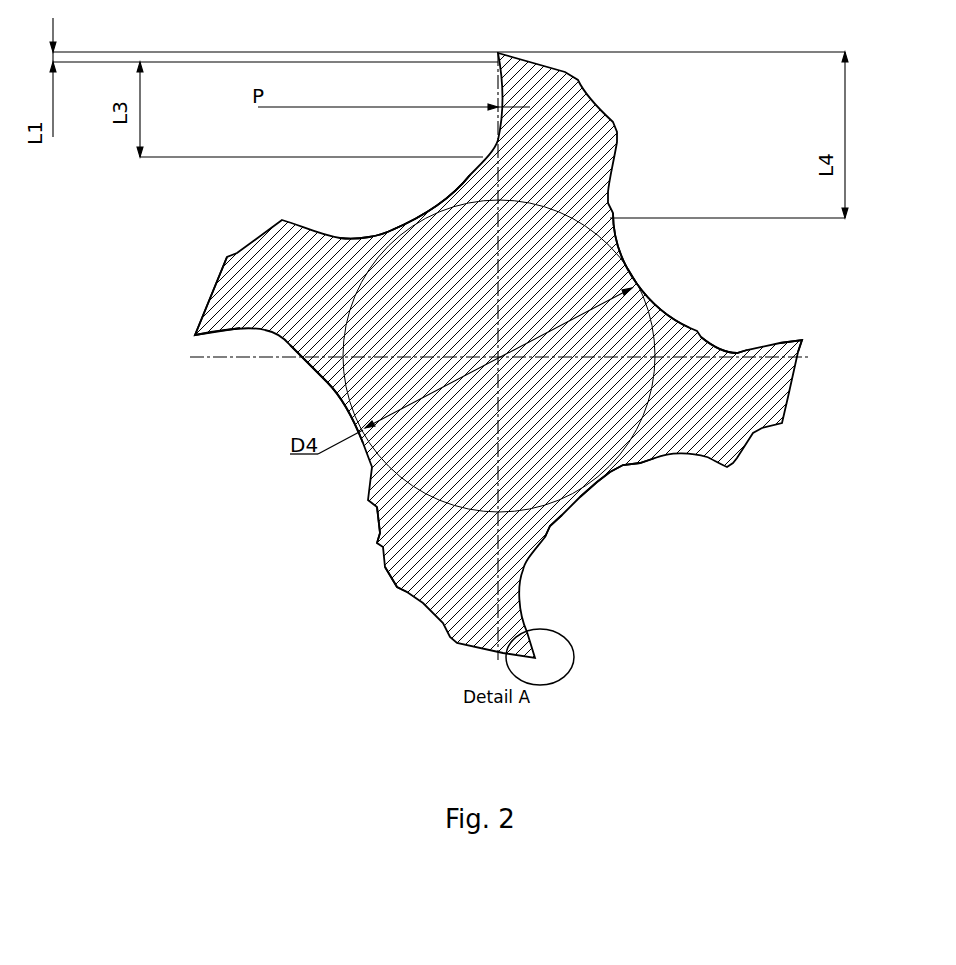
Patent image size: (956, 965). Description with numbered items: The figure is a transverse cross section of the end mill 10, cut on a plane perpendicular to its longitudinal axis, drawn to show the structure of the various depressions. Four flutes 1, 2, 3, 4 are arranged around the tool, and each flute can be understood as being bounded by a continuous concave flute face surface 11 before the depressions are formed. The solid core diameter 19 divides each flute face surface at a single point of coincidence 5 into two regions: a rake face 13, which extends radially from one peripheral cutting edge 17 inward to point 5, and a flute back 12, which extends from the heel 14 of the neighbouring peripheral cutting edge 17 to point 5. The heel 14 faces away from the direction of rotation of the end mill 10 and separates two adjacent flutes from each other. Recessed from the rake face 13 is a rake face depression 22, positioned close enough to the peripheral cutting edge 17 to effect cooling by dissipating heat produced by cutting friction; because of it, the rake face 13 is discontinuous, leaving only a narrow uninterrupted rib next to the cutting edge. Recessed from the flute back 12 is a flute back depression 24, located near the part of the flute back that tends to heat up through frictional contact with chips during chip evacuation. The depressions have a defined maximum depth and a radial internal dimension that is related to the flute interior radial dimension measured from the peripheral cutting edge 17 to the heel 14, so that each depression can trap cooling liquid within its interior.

The flute 1 is at (632, 550).
The flute 2 is at (653, 278).
The flute 3 is at (357, 210).
The flute 4 is at (255, 410).
The point of coincidence 5 is at (597, 482).
The end mill 10 is at (195, 293).
The flute face surface 11 is at (320, 377).
The flute back 12 is at (623, 465).
The rake face 13 is at (547, 537).
The heel 14 is at (395, 588).
The peripheral cutting edge 17 is at (802, 340).
The solid core diameter 19 is at (430, 270).
The rake face depression 22 is at (743, 353).
The flute back depression 24 is at (380, 535).